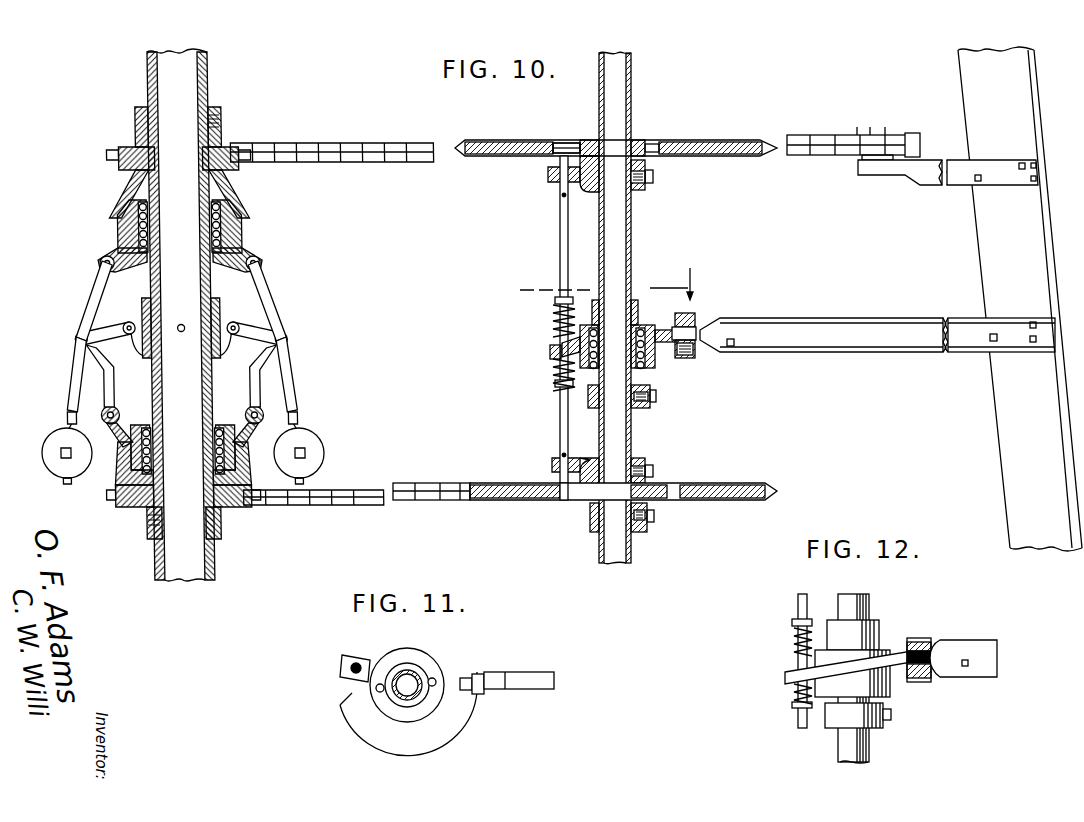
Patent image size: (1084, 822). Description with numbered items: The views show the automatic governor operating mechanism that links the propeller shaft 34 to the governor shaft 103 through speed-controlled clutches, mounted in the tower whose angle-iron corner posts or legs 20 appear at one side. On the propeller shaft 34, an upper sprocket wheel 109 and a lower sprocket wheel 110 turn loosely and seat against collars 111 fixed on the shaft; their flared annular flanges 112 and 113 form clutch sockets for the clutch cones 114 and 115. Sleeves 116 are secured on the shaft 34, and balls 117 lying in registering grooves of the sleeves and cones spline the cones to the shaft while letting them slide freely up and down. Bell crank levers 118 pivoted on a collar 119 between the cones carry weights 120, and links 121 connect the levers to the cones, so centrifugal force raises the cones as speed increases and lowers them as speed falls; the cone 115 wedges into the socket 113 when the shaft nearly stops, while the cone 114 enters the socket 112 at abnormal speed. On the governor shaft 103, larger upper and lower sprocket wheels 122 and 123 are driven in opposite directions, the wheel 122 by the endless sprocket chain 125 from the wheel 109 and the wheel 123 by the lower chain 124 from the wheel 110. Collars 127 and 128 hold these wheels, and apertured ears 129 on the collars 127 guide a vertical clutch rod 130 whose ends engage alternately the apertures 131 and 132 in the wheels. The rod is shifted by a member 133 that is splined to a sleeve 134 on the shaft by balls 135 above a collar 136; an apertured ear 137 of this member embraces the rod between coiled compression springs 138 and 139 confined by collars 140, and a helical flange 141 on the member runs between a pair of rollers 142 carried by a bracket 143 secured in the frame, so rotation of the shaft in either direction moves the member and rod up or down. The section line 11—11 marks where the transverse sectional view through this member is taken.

In FIG. 10, the propeller shaft 34 is at (207, 72).
In FIG. 10, the upper sprocket wheel 109 is at (140, 140).
In FIG. 10, the lower sprocket wheel 110 is at (136, 508).
In FIG. 10, the collars 111 is at (222, 105).
In FIG. 10, the flared annular flange 112 is at (112, 192).
In FIG. 10, the flared annular flange 113 is at (128, 472).
In FIG. 10, the clutch cone 114 is at (232, 236).
In FIG. 10, the clutch cone 115 is at (134, 432).
In FIG. 10, the sleeves 116 is at (214, 185).
In FIG. 10, the balls 117 is at (238, 214).
In FIG. 10, the bell crank levers 118 is at (70, 385).
In FIG. 10, the collar 119 is at (232, 292).
In FIG. 10, the weights 120 is at (47, 440).
In FIG. 10, the links 121 is at (272, 310).
In FIG. 10, the upper sprocket wheel 122 is at (490, 144).
In FIG. 10, the lower sprocket wheel 123 is at (495, 482).
In FIG. 10, the rod extension 124 is at (412, 482).
In FIG. 10, the endless sprocket chain 125 is at (384, 142).
In FIG. 10, the collars 127 is at (647, 188).
In FIG. 10, the collar 128 is at (590, 528).
In FIG. 10, the apertured ears 129 is at (546, 176).
In FIG. 10, the vertical clutch rod 130 is at (559, 248).
In FIG. 11, the vertical clutch rod 130 is at (340, 666).
In FIG. 12, the vertical clutch rod 130 is at (797, 607).
In FIG. 10, the aperture 131 is at (565, 143).
In FIG. 10, the aperture 132 is at (560, 502).
In FIG. 10, the member 133 is at (660, 375).
In FIG. 11, the member 133 is at (388, 652).
In FIG. 12, the member 133 is at (882, 697).
In FIG. 10, the sleeve 134 is at (638, 298).
In FIG. 11, the sleeve 134 is at (436, 680).
In FIG. 12, the sleeve 134 is at (879, 630).
In FIG. 10, the balls 135 is at (656, 366).
In FIG. 11, the balls 135 is at (376, 688).
In FIG. 10, the collar 136 is at (652, 405).
In FIG. 12, the collar 136 is at (829, 727).
In FIG. 10, the apertured ear 137 is at (549, 352).
In FIG. 10, the coiled compression spring 138 is at (553, 332).
In FIG. 12, the coiled compression spring 138 is at (793, 648).
In FIG. 10, the coiled compression spring 139 is at (553, 378).
In FIG. 12, the coiled compression spring 139 is at (793, 694).
In FIG. 10, the collars 140 is at (556, 297).
In FIG. 12, the collars 140 is at (795, 710).
In FIG. 10, the helical flange 141 is at (720, 330).
In FIG. 11, the helical flange 141 is at (357, 740).
In FIG. 12, the helical flange 141 is at (785, 678).
In FIG. 10, the rollers 142 is at (697, 324).
In FIG. 11, the rollers 142 is at (477, 696).
In FIG. 12, the rollers 142 is at (920, 682).
In FIG. 10, the bracket 143 is at (830, 330).
In FIG. 11, the bracket 143 is at (525, 670).
In FIG. 12, the bracket 143 is at (970, 646).
In FIG. 10, the corner posts or legs 20 is at (988, 265).
In FIG. 10, the governor shaft 103 is at (598, 107).
In FIG. 11, the governor shaft 103 is at (412, 672).
In FIG. 12, the governor shaft 103 is at (869, 604).
In FIG. 10, the section line 11— 11 is at (608, 284).